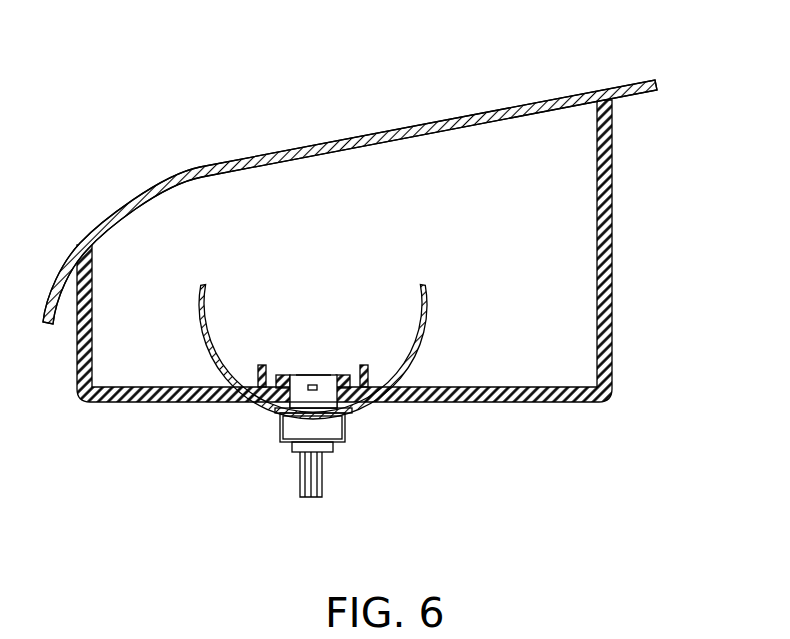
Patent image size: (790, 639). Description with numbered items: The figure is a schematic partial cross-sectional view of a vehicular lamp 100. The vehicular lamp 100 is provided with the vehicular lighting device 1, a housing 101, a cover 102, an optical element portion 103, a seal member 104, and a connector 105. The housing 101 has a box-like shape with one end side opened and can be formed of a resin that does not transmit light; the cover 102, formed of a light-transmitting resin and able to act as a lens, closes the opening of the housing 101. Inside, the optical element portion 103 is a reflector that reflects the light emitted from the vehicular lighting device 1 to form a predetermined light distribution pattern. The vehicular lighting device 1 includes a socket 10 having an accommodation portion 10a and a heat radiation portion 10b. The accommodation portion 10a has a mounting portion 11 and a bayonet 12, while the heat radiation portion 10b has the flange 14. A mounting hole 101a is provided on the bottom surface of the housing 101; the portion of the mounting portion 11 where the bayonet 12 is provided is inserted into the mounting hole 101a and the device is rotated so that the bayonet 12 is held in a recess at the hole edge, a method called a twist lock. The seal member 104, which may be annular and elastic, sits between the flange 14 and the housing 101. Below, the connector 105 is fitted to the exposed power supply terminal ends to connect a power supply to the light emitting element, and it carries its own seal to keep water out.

The vehicular lamp 100 is at (406, 202).
The housing 101 is at (612, 300).
The cover 102 is at (230, 173).
The optical element portion 103 is at (222, 330).
The seal member 104 is at (280, 407).
The mounting hole 101a is at (320, 392).
The connector 105 is at (318, 393).
The socket 10 is at (333, 397).
The accommodation portion 10a is at (333, 353).
The heat radiation portion 10b is at (355, 423).
The mounting portion 11 is at (323, 378).
The bayonet 12 is at (288, 387).
The flange 14 is at (284, 414).
The vehicular lighting device 1 is at (284, 457).